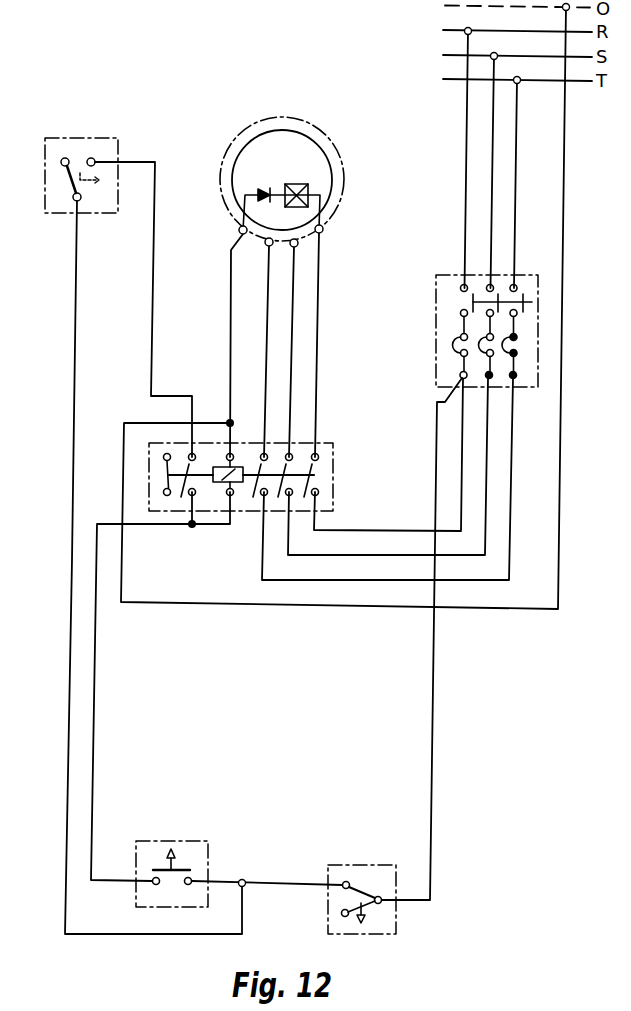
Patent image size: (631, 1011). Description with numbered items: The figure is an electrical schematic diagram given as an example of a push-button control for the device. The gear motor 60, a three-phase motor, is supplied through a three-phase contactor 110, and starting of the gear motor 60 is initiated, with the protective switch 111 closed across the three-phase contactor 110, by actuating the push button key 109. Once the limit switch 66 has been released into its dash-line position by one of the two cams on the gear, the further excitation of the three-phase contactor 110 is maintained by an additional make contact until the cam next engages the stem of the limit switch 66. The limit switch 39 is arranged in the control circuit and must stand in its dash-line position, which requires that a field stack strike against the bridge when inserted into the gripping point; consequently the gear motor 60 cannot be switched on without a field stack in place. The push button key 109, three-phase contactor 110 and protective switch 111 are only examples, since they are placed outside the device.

The limit switch 66 is at (82, 148).
The gear motor 60 is at (260, 147).
The protective switch 111 is at (445, 323).
The three-phase contactor 110 is at (325, 467).
The push button key 109 is at (180, 848).
The limit switch 39 is at (374, 870).